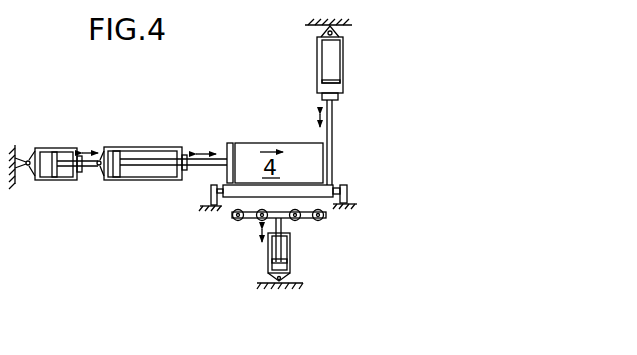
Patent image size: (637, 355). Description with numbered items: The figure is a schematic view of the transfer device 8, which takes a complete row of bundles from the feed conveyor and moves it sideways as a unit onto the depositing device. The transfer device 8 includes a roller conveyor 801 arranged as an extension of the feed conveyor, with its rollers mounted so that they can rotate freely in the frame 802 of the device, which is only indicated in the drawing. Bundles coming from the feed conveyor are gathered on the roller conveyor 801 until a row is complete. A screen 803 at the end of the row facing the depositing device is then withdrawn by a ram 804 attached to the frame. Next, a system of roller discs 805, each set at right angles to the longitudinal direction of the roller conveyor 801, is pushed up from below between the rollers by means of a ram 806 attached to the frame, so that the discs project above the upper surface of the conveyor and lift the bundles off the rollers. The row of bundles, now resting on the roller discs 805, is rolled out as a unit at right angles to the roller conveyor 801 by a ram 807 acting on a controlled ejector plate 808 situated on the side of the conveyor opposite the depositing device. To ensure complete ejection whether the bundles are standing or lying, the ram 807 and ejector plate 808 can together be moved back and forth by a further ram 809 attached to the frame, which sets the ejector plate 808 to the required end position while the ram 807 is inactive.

The transfer device 8 is at (175, 116).
The roller conveyor 801 is at (331, 189).
The frame 802 is at (350, 198).
The screen 803 is at (333, 158).
The ram 804 is at (345, 80).
The roller discs 805 is at (243, 224).
The ram 806 is at (292, 254).
The ram 807 is at (126, 146).
The ejector plate 808 is at (229, 142).
The further ram 809 is at (58, 129).